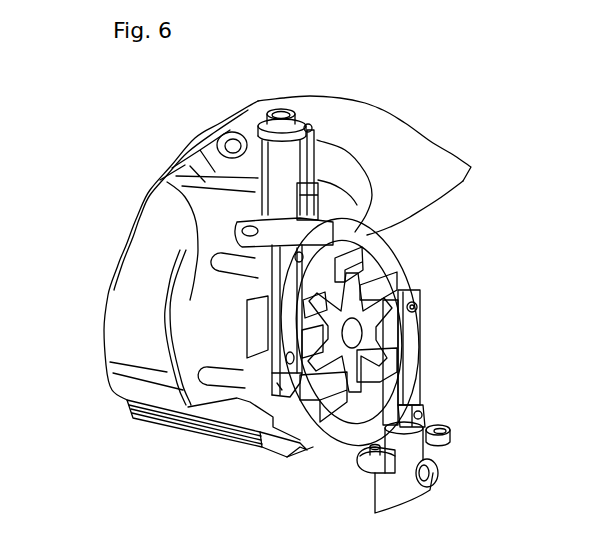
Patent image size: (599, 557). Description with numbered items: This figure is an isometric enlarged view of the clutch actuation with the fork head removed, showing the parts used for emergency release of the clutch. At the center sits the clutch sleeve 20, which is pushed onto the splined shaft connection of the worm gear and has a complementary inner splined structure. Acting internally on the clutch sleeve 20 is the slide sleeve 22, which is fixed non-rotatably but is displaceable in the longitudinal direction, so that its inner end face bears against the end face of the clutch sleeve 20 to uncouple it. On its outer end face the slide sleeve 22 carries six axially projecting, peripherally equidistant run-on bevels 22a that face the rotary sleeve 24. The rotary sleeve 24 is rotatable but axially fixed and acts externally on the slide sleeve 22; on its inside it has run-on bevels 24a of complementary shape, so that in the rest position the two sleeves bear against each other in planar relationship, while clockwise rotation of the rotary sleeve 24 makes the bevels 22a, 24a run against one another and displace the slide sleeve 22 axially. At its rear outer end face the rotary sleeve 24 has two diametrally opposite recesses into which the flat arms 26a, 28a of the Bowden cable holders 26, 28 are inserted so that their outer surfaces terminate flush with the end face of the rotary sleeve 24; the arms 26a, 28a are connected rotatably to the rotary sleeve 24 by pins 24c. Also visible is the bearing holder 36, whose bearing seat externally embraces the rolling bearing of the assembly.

The clutch sleeve 20 is at (153, 232).
The slide sleeve 22 is at (185, 302).
The run-on bevels 22a is at (250, 317).
The rotary sleeve 24 is at (287, 423).
The run-on bevels of the rotary sleeve 24a is at (253, 340).
The pins 24c is at (415, 307).
The Bowden cable holder 26 is at (267, 173).
The flat arm 26a is at (287, 283).
The Bowden cable holder 28 is at (417, 445).
The flat arm 28a is at (410, 372).
The bearing holder 36 is at (335, 293).